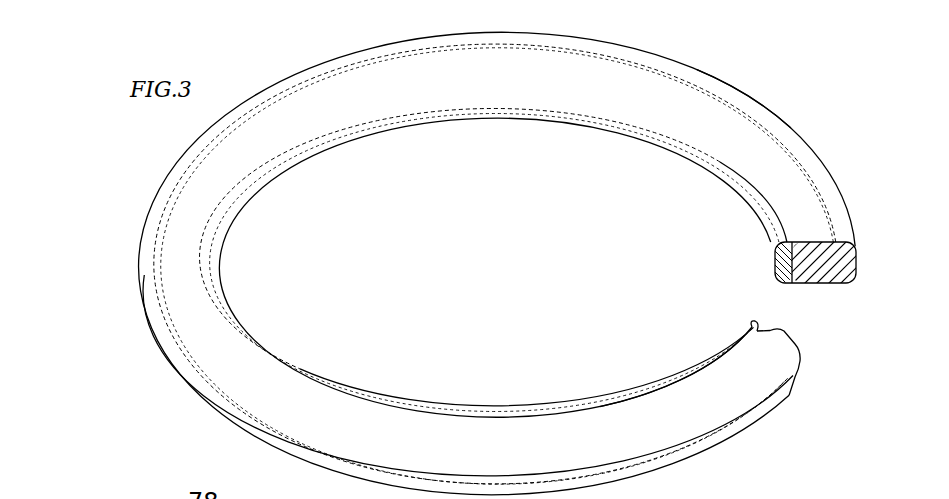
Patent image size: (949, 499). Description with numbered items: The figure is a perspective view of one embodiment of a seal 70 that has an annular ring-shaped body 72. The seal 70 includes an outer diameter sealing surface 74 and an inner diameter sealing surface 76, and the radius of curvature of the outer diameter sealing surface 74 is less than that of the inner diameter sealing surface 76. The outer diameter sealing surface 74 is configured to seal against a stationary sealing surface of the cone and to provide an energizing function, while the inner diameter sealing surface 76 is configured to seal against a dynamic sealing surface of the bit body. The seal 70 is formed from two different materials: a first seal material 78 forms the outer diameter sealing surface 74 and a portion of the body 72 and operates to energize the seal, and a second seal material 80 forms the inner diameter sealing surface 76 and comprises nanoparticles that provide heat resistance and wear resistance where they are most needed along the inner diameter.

The seal 70 is at (838, 160).
The annular ring-shaped body 72 is at (750, 137).
The outer diameter sealing surface 74 is at (843, 223).
The inner diameter sealing surface 76 is at (723, 343).
The first seal material 78 is at (827, 265).
The second seal material 80 is at (760, 345).